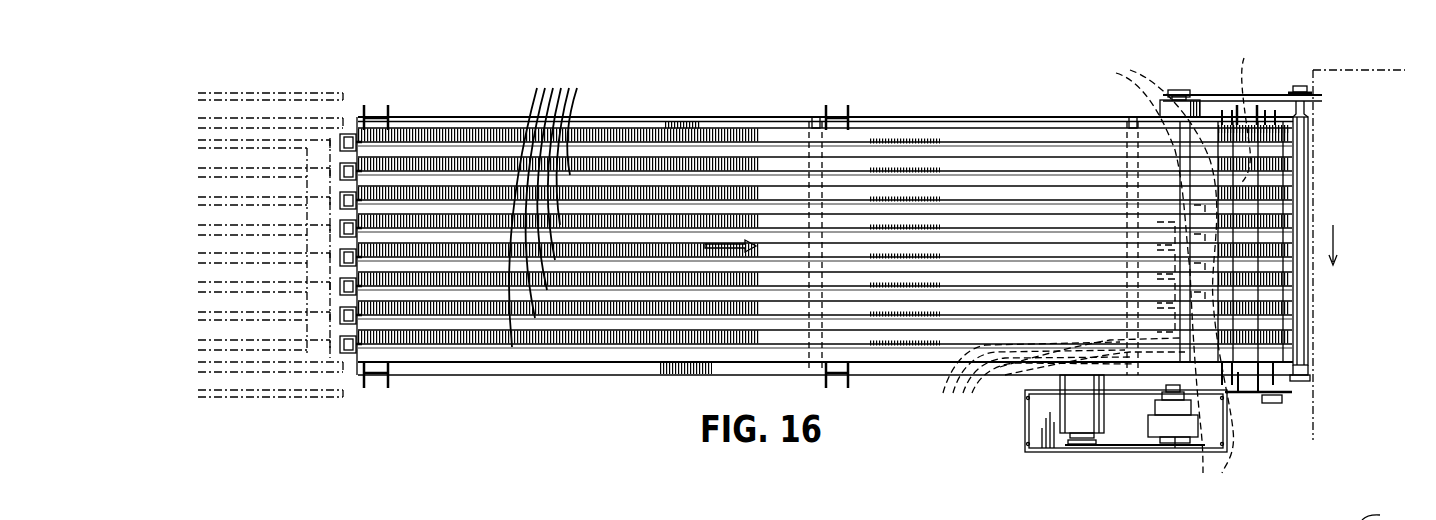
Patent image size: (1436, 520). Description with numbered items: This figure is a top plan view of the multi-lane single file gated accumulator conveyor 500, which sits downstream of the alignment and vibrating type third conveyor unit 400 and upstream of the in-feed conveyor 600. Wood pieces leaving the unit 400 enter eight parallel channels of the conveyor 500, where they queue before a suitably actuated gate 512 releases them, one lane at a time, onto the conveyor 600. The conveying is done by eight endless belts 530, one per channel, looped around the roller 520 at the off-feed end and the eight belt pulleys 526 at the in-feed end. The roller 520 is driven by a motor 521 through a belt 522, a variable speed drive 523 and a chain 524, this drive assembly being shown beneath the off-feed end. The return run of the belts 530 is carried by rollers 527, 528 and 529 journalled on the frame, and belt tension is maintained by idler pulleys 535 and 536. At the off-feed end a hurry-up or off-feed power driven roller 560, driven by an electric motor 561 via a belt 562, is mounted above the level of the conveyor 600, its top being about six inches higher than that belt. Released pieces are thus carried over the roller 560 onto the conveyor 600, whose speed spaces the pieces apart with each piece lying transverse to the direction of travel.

The alignment and vibrating type third conveyor unit 400 is at (293, 66).
The multi-lane article single file belt type conveyor 500 is at (708, 68).
The gate 512 is at (1397, 504).
The roller 520 is at (1290, 153).
The motor 521 is at (1068, 397).
The belt 522 is at (1115, 440).
The variable speed drive 523 is at (1163, 423).
The chain 524 is at (1255, 397).
The belt pulleys 526 is at (352, 124).
The roller 527 is at (1265, 108).
The roller 528 is at (1126, 163).
The roller 529 is at (809, 181).
The endless belts 530 is at (549, 200).
The idler pulleys 535 is at (1060, 382).
The idler pulleys 536 is at (1146, 282).
The off-feed power driven roller 560 is at (1300, 198).
The electric motor 561 is at (1165, 105).
The belt 562 is at (1216, 95).
The in-feed conveyor 600 is at (1316, 424).